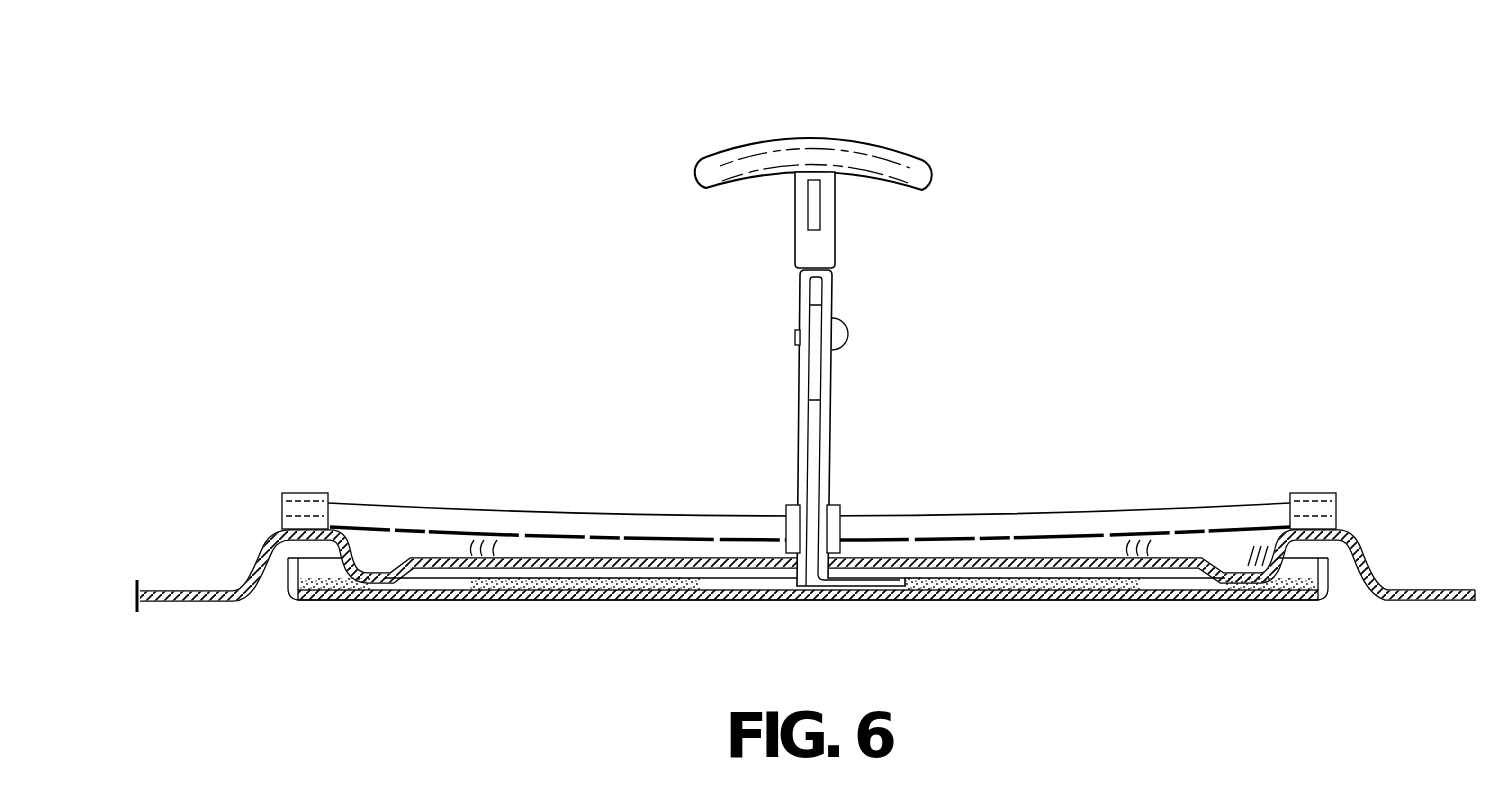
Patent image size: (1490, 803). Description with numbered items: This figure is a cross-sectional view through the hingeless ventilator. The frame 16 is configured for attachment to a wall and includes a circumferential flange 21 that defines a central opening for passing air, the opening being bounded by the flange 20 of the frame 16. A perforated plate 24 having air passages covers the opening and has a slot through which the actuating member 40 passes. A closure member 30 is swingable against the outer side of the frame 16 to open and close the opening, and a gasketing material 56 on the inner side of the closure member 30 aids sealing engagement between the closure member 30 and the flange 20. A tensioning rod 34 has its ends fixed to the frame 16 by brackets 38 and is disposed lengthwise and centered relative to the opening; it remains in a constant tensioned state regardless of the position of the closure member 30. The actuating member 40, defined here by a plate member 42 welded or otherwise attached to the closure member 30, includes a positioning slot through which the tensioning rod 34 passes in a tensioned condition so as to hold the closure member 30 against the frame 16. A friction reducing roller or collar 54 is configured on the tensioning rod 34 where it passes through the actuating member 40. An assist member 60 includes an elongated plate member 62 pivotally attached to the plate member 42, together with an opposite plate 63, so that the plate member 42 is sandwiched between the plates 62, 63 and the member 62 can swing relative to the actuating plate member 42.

The frame 16 is at (806, 527).
The flange 20 is at (370, 600).
The circumferential flange 21 is at (1400, 601).
The perforated plate 24 is at (618, 556).
The closure member 30 is at (765, 622).
The tensioning rod 34 is at (482, 511).
The brackets 38 is at (302, 491).
The actuating member 40 is at (924, 204).
The plate member 42 is at (815, 357).
The roller or collar 54 is at (830, 510).
The gasketing material 56 is at (520, 600).
The assist member 60 is at (853, 309).
The elongated member 62 is at (827, 404).
The opposite plate 63 is at (800, 436).